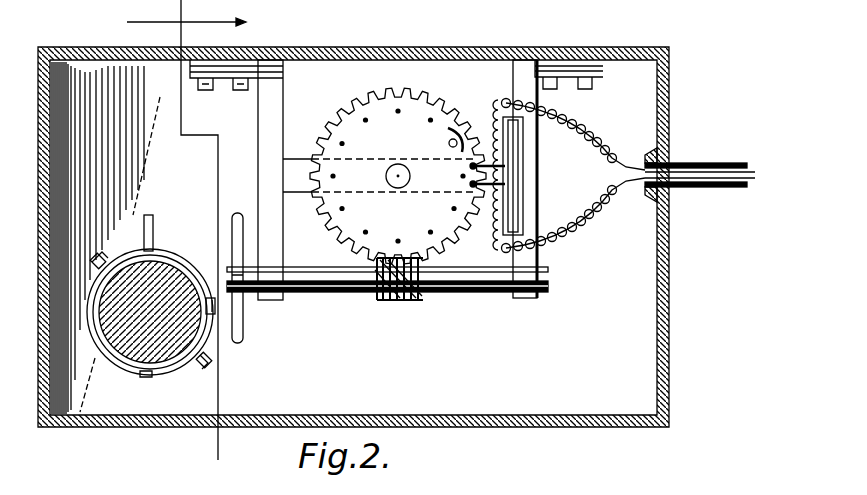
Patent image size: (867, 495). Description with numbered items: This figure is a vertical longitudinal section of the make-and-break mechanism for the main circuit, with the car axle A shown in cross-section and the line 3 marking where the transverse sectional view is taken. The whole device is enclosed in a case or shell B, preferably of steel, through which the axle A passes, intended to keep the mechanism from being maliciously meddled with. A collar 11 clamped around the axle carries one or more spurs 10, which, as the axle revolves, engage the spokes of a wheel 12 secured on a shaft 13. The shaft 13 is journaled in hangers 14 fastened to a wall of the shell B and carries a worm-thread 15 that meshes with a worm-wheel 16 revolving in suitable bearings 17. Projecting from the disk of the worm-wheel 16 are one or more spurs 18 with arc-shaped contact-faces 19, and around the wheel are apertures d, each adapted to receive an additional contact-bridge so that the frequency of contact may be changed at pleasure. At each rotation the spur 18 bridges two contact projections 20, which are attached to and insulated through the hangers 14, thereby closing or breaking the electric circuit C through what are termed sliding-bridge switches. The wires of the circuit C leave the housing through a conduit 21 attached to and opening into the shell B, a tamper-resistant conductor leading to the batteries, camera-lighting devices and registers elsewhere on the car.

The section line 3 3 is at (186, 238).
The case or shell B is at (445, 47).
The axle A is at (151, 301).
The spurs 10 is at (154, 227).
The collar 11 is at (131, 372).
The wheel 12 is at (238, 213).
The shaft 13 is at (387, 270).
The hangers 14 is at (258, 153).
The worm-thread 15 is at (408, 302).
The worm-wheel 16 is at (397, 104).
The bearings 17 is at (305, 165).
The spurs 18 is at (449, 145).
The contact-faces 19 is at (462, 126).
The contact projections 20 is at (470, 184).
The conduit 21 is at (713, 170).
The electric circuit C is at (569, 174).
The apertures d is at (340, 206).